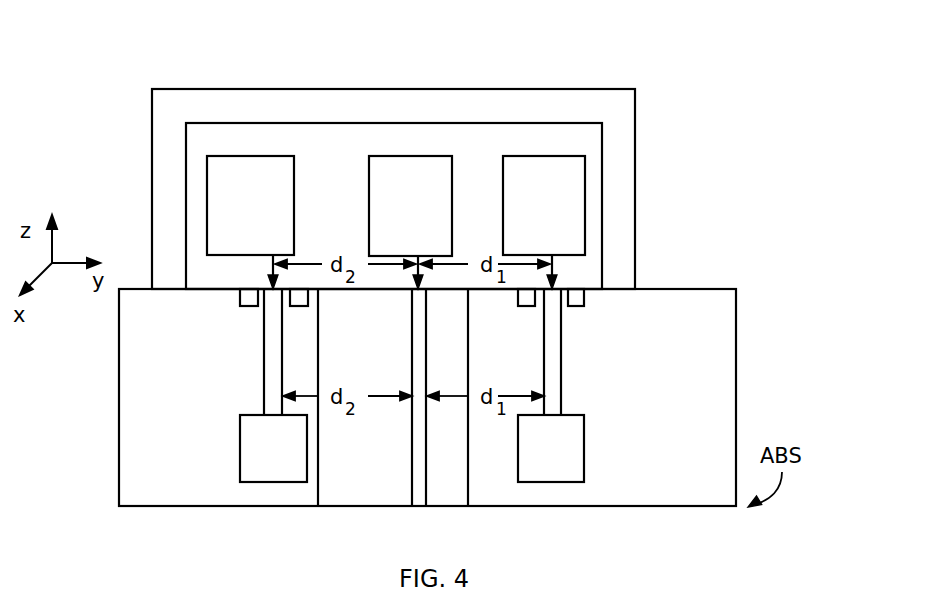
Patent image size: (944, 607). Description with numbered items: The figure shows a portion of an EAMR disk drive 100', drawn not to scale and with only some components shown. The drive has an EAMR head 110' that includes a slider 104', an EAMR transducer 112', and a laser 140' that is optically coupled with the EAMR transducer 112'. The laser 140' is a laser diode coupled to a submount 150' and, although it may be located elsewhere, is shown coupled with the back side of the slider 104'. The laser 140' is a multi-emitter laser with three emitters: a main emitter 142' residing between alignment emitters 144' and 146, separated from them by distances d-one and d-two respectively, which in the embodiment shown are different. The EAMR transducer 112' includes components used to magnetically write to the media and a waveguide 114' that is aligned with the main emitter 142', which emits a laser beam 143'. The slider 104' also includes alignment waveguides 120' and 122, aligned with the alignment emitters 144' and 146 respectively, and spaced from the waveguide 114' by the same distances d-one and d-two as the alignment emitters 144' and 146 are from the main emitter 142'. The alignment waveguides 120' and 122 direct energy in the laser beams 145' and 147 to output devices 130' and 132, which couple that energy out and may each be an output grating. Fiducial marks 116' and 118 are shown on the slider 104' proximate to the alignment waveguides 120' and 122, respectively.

The EAMR disk drive 100' is at (427, 262).
The slider 104' is at (395, 529).
The EAMR head 110' is at (490, 357).
The EAMR transducer 112' is at (366, 416).
The waveguide 114' is at (445, 424).
The fiducial mark 116' is at (622, 276).
The fiducial mark 118 is at (228, 298).
The alignment waveguide 120' is at (676, 352).
The alignment waveguide 122 is at (264, 350).
The output device 130' is at (663, 434).
The output device 132 is at (240, 430).
The laser 140' is at (447, 192).
The main emitter 142' is at (414, 154).
The laser beam 143' is at (369, 171).
The alignment emitter 144' is at (605, 190).
The laser beam 145' is at (620, 241).
The alignment emitter 146 is at (207, 215).
The laser beam 147 is at (270, 276).
The submount 150' is at (361, 184).